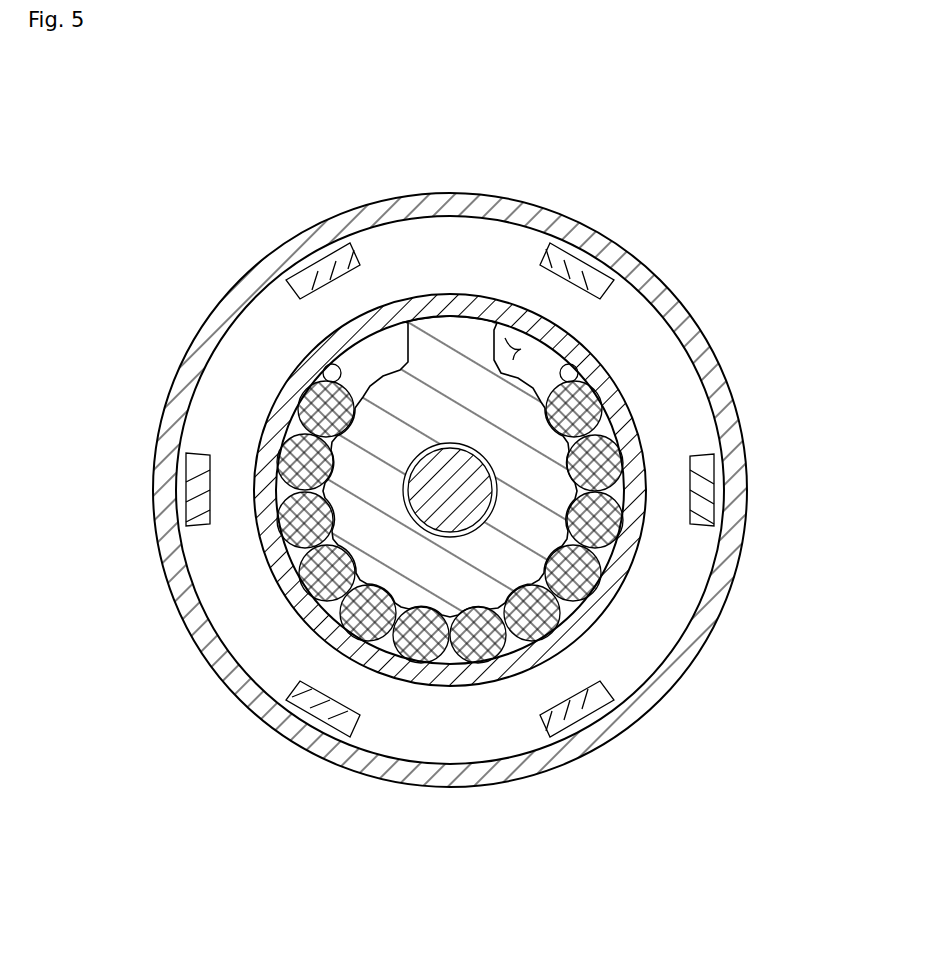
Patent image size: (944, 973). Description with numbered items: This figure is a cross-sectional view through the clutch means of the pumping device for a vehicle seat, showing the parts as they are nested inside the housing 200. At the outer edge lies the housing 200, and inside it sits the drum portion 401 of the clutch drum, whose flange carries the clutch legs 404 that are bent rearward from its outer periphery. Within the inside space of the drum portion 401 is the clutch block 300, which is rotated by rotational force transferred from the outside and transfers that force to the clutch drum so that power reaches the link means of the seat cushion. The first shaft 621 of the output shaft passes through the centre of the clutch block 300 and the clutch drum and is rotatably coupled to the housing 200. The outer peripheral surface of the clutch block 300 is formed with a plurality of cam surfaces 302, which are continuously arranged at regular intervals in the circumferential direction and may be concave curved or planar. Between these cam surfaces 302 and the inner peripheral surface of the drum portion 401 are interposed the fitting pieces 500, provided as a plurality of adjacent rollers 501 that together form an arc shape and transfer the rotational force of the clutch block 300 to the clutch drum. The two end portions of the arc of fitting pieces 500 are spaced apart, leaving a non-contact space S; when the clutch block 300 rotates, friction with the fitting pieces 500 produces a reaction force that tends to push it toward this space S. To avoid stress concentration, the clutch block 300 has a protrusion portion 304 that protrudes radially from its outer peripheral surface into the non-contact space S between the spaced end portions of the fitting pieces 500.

The housing 200 is at (545, 201).
The clutch block 300 is at (412, 493).
The cam surfaces 302 is at (520, 585).
The protrusion portion 304 is at (447, 320).
The drum portion 401 is at (600, 377).
The clutch legs 404 is at (705, 487).
The fitting pieces 500 is at (458, 570).
The rollers 501 is at (327, 580).
The first shaft 621 is at (431, 515).
The non-contact space S is at (512, 345).